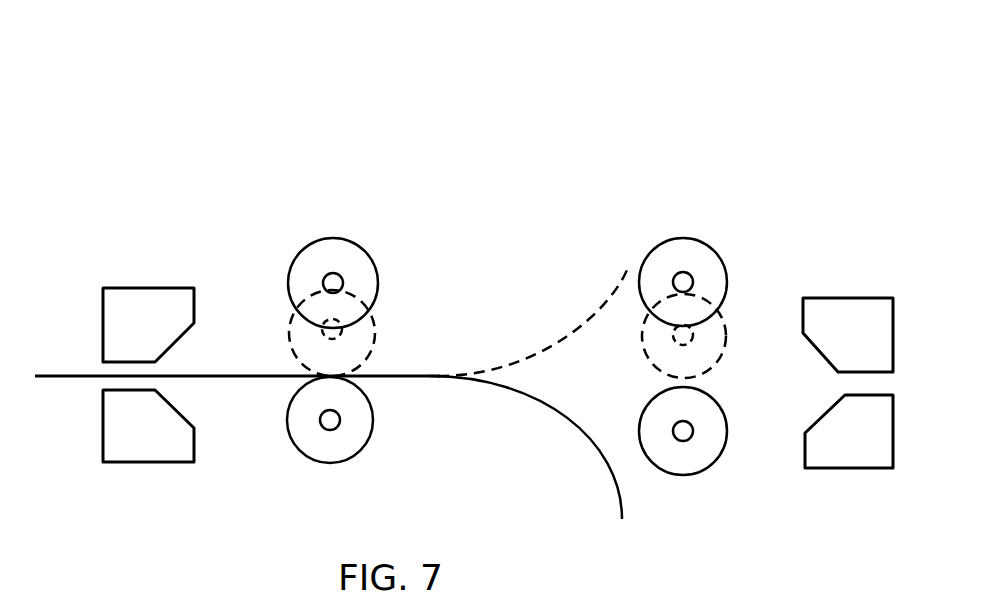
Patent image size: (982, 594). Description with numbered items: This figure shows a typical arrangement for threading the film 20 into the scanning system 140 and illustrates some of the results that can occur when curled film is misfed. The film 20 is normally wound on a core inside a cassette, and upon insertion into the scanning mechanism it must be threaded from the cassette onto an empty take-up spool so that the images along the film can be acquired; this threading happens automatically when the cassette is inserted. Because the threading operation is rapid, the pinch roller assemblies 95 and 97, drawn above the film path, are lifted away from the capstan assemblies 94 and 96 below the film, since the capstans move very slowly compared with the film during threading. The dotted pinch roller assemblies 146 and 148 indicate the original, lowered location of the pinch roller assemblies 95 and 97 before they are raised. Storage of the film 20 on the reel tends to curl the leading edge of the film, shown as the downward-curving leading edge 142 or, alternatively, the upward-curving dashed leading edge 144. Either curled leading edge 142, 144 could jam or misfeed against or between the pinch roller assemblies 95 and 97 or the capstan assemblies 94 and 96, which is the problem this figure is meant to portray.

The scanning system 140 is at (258, 175).
The film 20 is at (68, 373).
The curled leading edge of the film 142 is at (577, 430).
The alternative curled leading edge of the film 144 is at (534, 358).
The capstan assembly 94 is at (305, 455).
The pinch roller assembly 95 is at (350, 242).
The capstan assembly 96 is at (702, 472).
The pinch roller assembly 97 is at (692, 238).
The dotted pinch roller assembly 146 is at (290, 337).
The dotted pinch roller assembly 148 is at (728, 338).